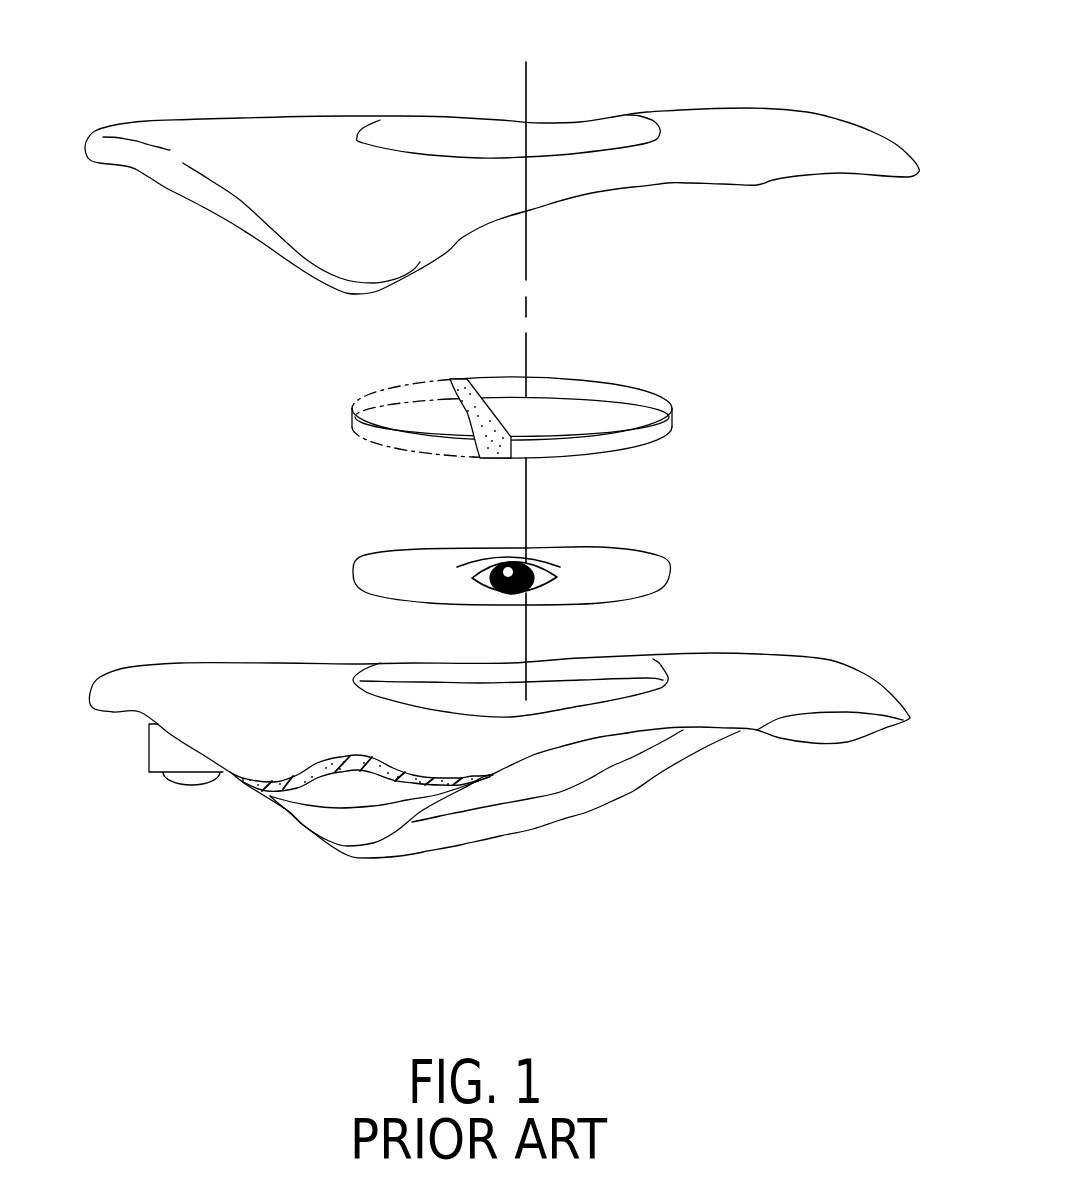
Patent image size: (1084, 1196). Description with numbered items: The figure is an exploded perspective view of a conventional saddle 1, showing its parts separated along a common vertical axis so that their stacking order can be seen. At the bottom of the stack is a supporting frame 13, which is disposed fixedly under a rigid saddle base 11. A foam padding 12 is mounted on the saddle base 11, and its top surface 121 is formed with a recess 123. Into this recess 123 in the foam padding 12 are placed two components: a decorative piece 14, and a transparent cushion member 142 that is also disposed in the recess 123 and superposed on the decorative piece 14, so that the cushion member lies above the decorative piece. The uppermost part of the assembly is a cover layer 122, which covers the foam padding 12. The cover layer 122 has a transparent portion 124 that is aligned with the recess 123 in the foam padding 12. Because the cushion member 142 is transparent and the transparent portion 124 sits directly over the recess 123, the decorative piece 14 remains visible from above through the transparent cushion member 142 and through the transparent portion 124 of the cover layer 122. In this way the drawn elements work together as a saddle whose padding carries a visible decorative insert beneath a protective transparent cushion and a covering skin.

The conventional saddle 1 is at (771, 561).
The rigid saddle base 11 is at (367, 793).
The foam padding 12 is at (277, 787).
The supporting frame 13 is at (508, 823).
The decorative piece 14 is at (640, 552).
The top surface 121 is at (213, 663).
The cover layer 122 is at (237, 197).
The recess 123 is at (630, 690).
The transparent portion 124 is at (583, 140).
The transparent cushion member 142 is at (593, 388).